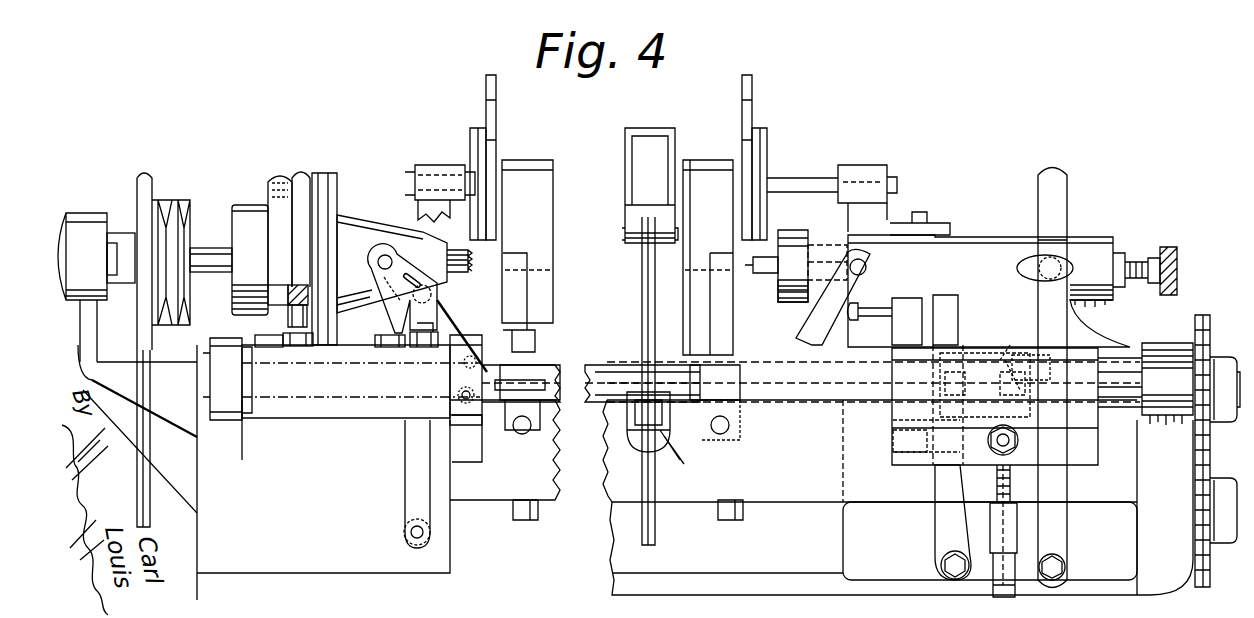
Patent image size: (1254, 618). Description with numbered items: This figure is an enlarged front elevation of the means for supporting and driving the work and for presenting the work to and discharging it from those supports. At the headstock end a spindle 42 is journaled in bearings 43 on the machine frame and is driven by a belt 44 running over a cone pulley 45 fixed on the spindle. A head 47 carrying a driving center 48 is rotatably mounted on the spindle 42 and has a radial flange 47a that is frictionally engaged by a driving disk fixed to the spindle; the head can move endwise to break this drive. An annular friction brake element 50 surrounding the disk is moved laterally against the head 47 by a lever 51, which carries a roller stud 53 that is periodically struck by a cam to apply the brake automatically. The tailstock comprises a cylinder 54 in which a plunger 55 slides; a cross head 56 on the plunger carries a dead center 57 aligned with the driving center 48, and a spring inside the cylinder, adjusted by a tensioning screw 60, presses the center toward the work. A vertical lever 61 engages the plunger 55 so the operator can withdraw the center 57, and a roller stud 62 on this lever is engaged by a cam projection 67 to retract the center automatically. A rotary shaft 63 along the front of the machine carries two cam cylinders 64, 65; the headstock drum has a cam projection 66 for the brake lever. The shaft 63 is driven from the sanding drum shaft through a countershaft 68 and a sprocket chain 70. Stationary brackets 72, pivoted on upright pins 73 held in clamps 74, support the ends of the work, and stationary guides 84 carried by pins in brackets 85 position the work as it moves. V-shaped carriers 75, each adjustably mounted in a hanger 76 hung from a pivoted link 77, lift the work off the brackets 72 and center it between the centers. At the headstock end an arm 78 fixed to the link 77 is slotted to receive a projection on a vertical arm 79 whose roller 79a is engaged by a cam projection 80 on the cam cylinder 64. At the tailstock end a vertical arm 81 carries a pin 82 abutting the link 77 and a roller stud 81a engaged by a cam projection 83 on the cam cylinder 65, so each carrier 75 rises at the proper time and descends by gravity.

The spindle 42 is at (208, 248).
The bearings 43 is at (88, 213).
The belt 44 is at (150, 523).
The cone pulley 45 is at (172, 198).
The head 47 is at (347, 225).
The radial flange 47a is at (337, 175).
The driving center 48 is at (473, 262).
The annular friction brake element 50 is at (300, 170).
The lever 51 is at (288, 312).
The roller stud 53 is at (292, 346).
The cylinder 54 is at (975, 240).
The plunger 55 is at (828, 248).
The cross head 56 is at (778, 294).
The dead center 57 is at (790, 242).
The tensioning screw 60 is at (1168, 247).
The vertical lever 61 is at (1040, 316).
The roller stud 62 is at (1099, 420).
The rotary shaft 63 is at (590, 403).
The cam cylinder 64 is at (338, 410).
The cam cylinder 65 is at (982, 420).
The cam projection 66 is at (270, 348).
The cam projection 67 is at (1025, 355).
The countershaft 68 is at (1228, 492).
The sprocket chain 70 is at (1197, 460).
The stationary brackets 72 is at (649, 136).
The upright pins 73 is at (642, 300).
The clamps 74 is at (634, 438).
The V-shaped carriers 75 is at (528, 172).
The hanger 76 is at (468, 495).
The link 77 is at (455, 330).
The arm 78 is at (403, 255).
The vertical arm 79 is at (406, 441).
The roller 79a is at (416, 347).
The cam projection 80 is at (372, 342).
The vertical arm 81 is at (948, 300).
The roller stud 81a is at (895, 408).
The pin 82 is at (878, 308).
The cam projection 83 is at (968, 350).
The stationary guides 84 is at (486, 86).
The brackets 85 is at (437, 165).